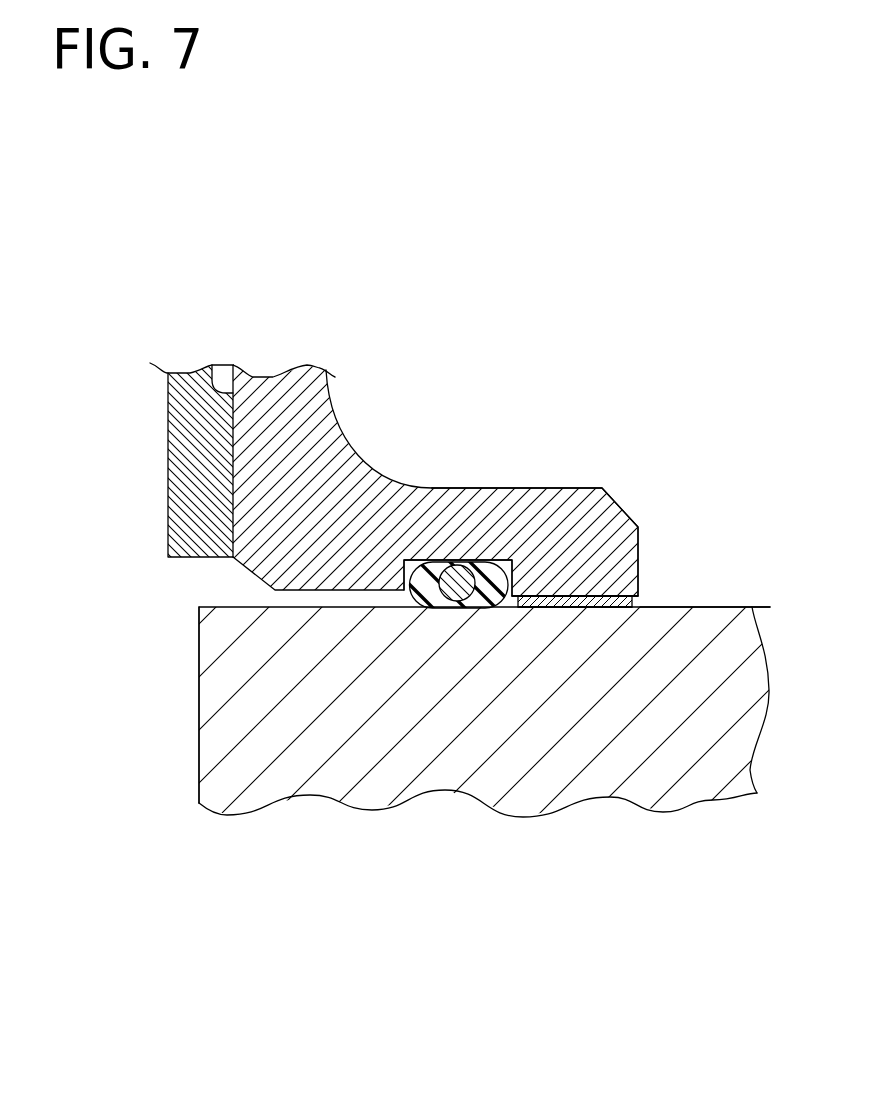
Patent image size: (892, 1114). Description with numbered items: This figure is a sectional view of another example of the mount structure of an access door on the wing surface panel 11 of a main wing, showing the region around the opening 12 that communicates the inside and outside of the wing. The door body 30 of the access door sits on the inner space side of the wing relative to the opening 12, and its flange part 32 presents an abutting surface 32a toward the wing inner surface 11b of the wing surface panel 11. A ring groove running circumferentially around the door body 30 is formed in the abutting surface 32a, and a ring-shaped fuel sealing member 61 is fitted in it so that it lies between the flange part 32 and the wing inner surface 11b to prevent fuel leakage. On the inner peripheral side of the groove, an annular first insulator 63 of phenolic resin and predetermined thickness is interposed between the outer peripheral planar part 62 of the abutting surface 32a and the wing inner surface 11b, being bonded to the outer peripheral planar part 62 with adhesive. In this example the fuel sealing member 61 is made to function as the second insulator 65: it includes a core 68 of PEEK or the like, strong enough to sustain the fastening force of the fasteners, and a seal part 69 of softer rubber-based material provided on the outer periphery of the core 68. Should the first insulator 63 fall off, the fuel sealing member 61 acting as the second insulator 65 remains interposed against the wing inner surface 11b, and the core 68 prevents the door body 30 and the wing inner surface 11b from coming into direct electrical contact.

The door body 30 is at (333, 412).
The flange part 32 is at (513, 488).
The abutting surface 32a is at (615, 607).
The wing surface panel 11 is at (752, 612).
The wing inner surface 11b is at (688, 607).
The opening 12 is at (199, 768).
The fuel sealing member 61 is at (451, 738).
The second insulator 65 is at (451, 716).
The core 68 is at (455, 585).
The seal part 69 is at (479, 601).
The outer peripheral planar part 62 is at (593, 602).
The first insulator 63 is at (571, 608).